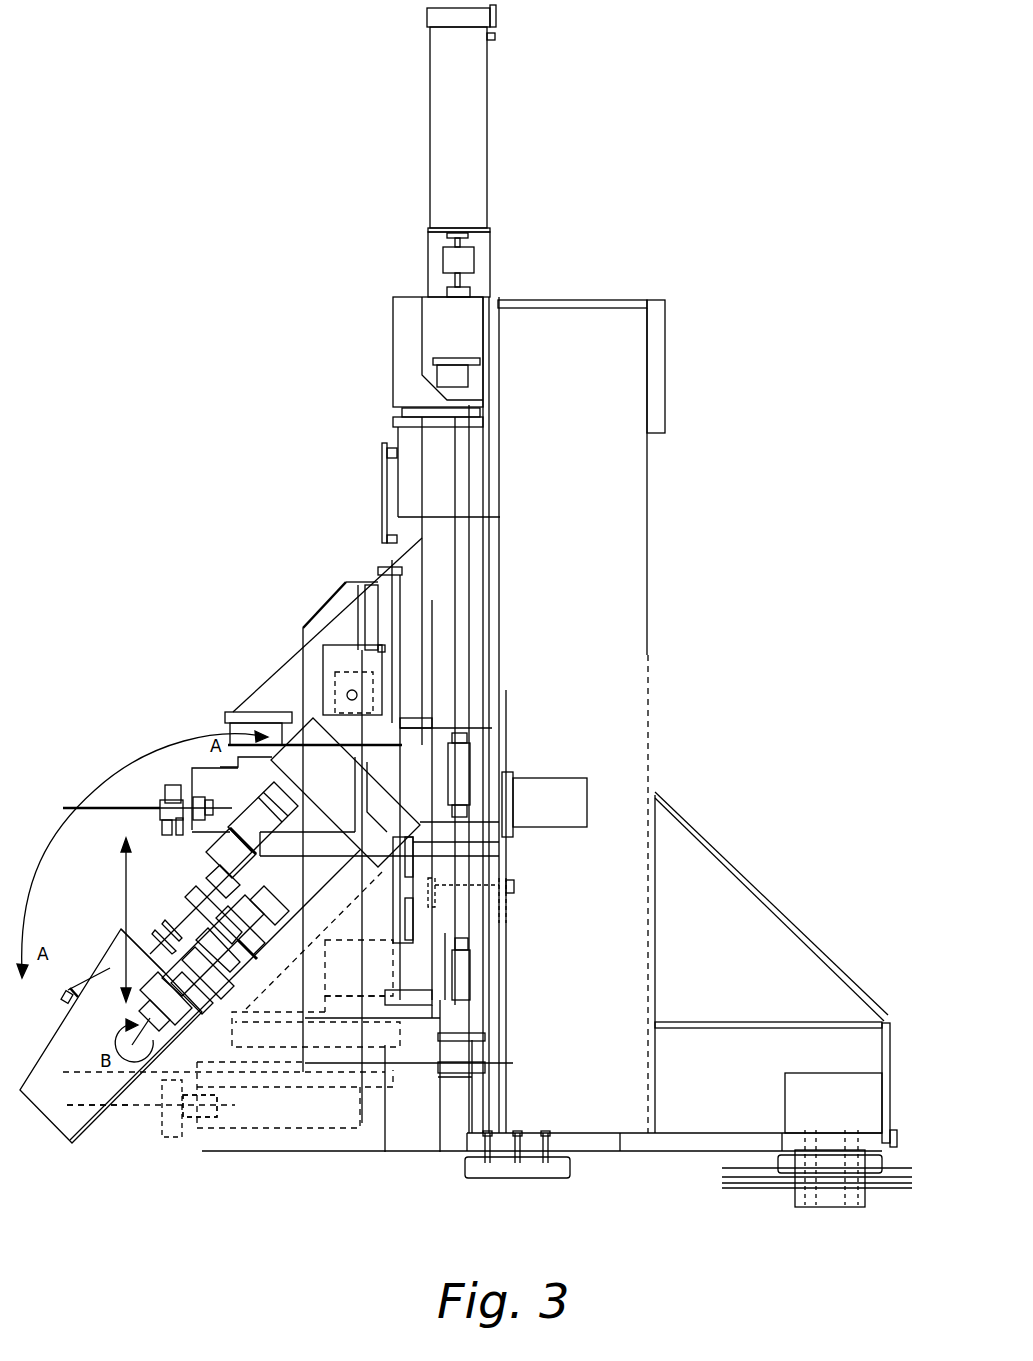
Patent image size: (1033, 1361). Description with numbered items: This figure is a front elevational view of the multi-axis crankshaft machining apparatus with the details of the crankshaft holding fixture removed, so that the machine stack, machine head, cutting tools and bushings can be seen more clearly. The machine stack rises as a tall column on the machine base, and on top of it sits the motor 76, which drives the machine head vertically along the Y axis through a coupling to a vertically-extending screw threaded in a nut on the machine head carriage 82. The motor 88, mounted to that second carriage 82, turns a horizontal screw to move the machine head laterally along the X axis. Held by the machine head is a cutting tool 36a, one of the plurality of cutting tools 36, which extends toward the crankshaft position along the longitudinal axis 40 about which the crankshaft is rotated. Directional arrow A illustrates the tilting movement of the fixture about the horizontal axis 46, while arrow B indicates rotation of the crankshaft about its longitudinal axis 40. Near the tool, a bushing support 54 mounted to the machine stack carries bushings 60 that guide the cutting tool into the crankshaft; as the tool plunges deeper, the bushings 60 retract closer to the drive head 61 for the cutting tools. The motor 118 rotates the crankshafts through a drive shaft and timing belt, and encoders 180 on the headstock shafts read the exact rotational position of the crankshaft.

The motor 76 is at (478, 135).
The motor 88 is at (345, 684).
The machine head carriage 82 is at (280, 742).
The cutting tools 36 is at (80, 815).
The bushings 60 is at (165, 800).
The bushing support 54 is at (168, 790).
The drive head 61 is at (251, 798).
The motor 118 is at (208, 857).
The longitudinal axis 40 is at (287, 893).
The horizontal axis 46 is at (200, 983).
The cutting tool 36a is at (130, 1100).
The encoders 180 is at (470, 770).